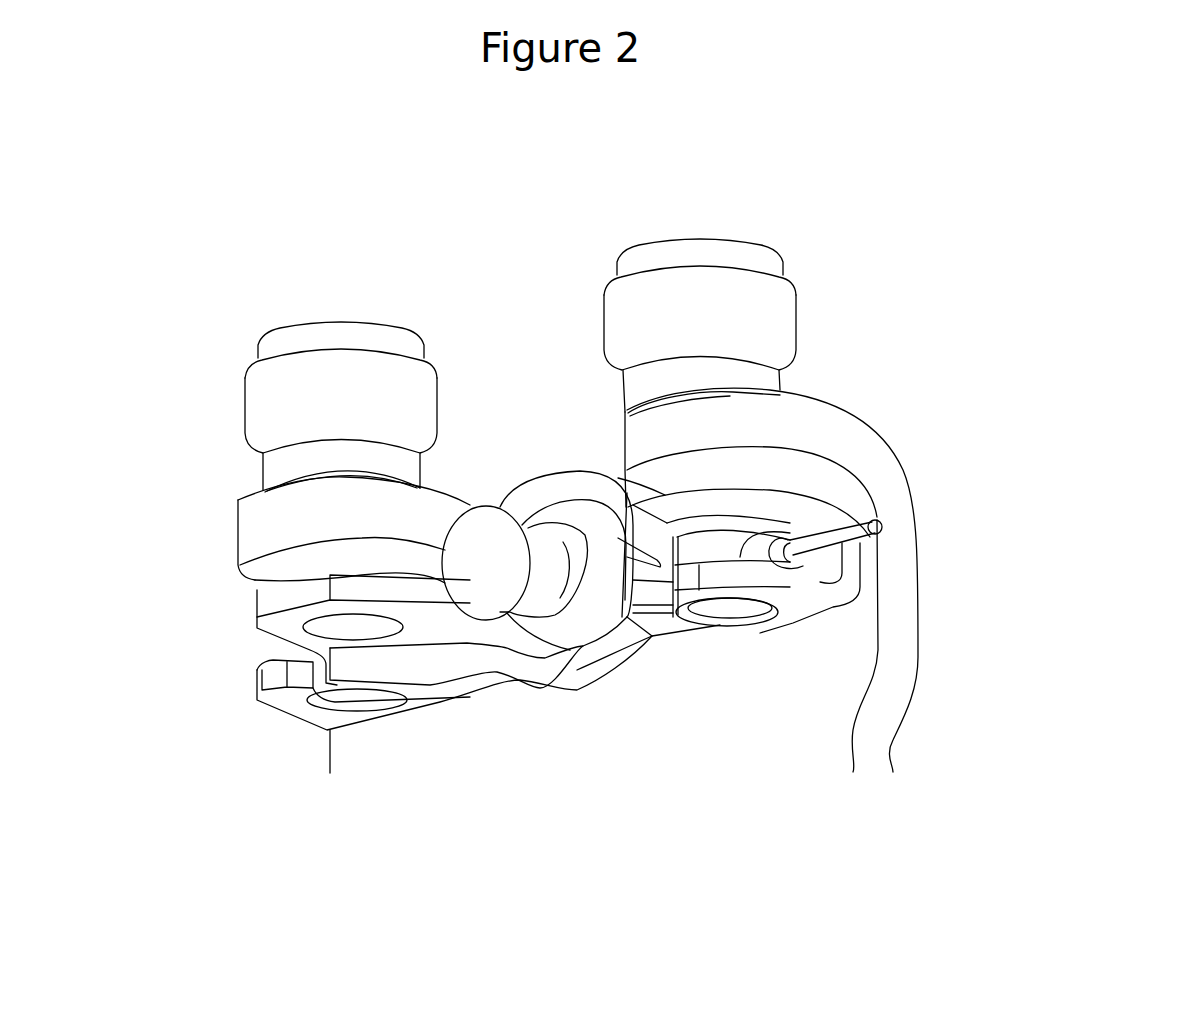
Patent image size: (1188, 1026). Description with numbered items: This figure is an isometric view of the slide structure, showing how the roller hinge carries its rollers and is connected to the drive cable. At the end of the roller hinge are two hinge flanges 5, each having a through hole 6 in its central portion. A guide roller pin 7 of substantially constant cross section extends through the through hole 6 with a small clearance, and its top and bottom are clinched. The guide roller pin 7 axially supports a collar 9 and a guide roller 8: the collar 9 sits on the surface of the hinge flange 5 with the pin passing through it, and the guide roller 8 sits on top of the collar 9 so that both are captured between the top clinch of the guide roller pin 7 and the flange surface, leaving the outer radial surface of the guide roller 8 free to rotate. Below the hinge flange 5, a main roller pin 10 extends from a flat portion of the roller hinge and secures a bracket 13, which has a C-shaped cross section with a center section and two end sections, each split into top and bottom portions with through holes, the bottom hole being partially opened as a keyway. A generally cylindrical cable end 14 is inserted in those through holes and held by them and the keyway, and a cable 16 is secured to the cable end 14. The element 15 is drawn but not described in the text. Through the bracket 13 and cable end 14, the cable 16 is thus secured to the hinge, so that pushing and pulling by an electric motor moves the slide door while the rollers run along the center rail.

The hinge flange 5 is at (265, 514).
The through hole 6 is at (725, 468).
The guide roller pin 7 is at (762, 247).
The guide roller 8 is at (800, 318).
The collar 9 is at (740, 370).
The main roller pin 10 is at (468, 603).
The bracket 13 is at (583, 680).
The cable end 14 is at (722, 540).
The rod 15 is at (762, 549).
The cable 16 is at (881, 524).